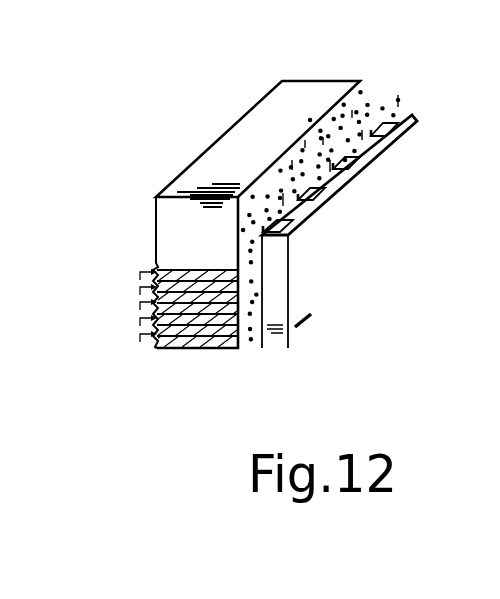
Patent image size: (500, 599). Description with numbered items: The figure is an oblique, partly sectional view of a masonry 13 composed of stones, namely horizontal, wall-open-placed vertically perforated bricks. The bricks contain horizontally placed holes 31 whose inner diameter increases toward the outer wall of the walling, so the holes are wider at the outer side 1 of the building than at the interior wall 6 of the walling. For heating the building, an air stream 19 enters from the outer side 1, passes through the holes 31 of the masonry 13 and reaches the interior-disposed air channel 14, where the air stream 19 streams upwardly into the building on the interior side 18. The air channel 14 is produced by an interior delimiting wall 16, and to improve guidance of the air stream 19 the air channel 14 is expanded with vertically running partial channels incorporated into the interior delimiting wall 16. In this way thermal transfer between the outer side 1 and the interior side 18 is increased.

The outer side 1 is at (109, 303).
The interior wall 6 is at (364, 91).
The masonry 13 is at (247, 142).
The interior-disposed air channel 14 is at (350, 178).
The interior delimiting wall 16 is at (275, 266).
The interior side 18 is at (374, 315).
The air stream 19 is at (370, 162).
The holes 31 is at (167, 319).